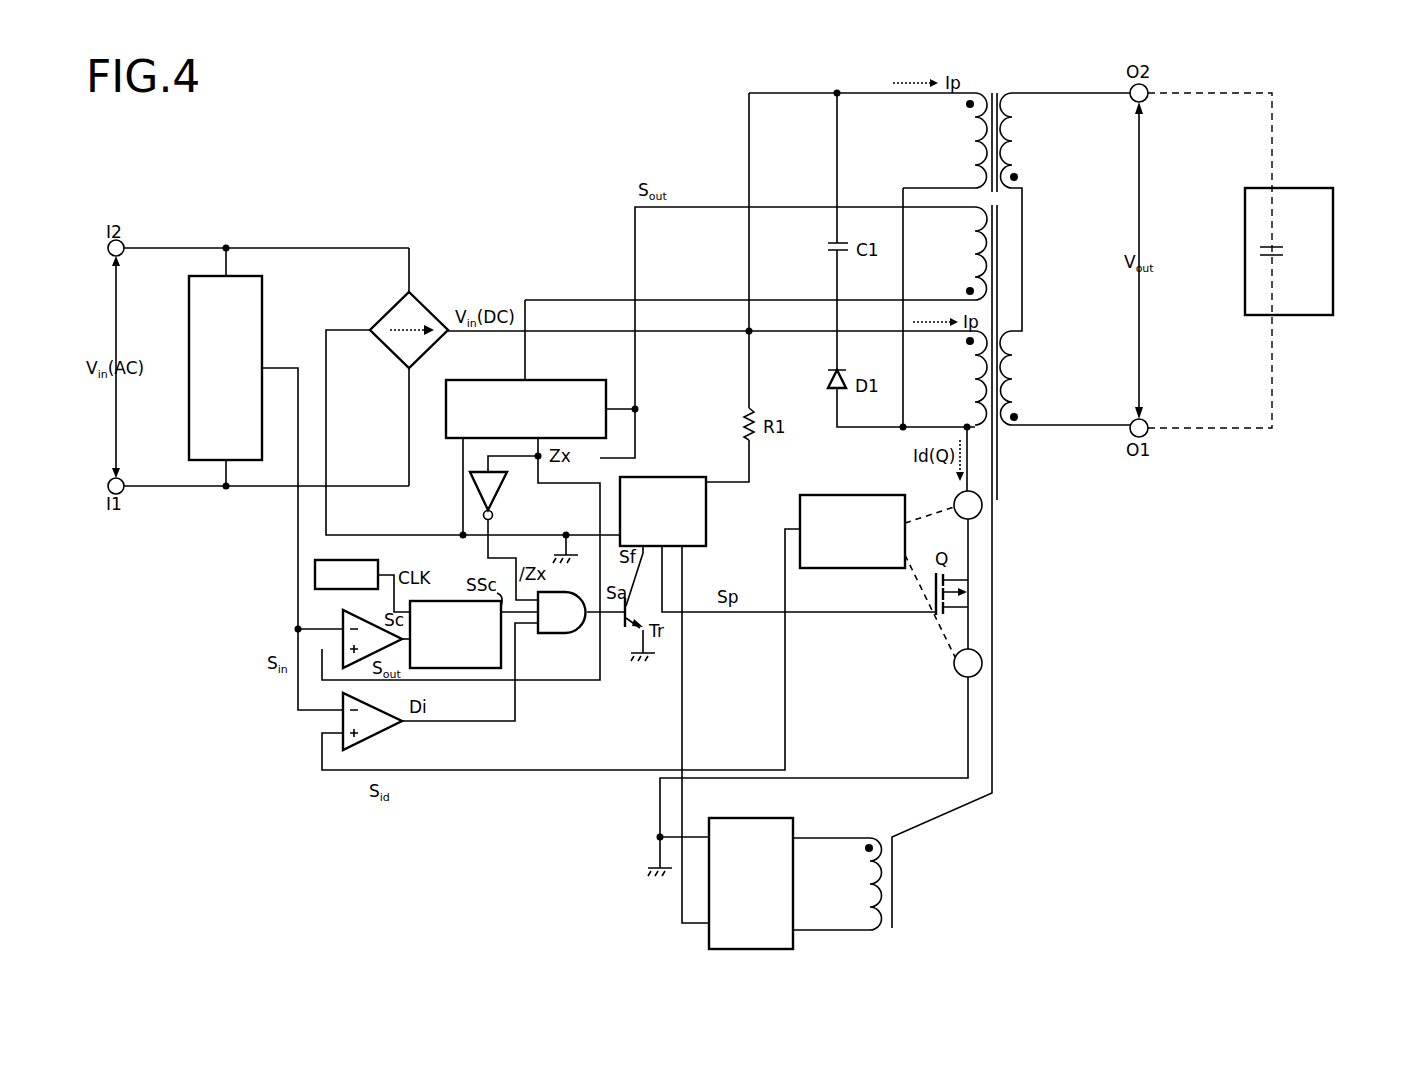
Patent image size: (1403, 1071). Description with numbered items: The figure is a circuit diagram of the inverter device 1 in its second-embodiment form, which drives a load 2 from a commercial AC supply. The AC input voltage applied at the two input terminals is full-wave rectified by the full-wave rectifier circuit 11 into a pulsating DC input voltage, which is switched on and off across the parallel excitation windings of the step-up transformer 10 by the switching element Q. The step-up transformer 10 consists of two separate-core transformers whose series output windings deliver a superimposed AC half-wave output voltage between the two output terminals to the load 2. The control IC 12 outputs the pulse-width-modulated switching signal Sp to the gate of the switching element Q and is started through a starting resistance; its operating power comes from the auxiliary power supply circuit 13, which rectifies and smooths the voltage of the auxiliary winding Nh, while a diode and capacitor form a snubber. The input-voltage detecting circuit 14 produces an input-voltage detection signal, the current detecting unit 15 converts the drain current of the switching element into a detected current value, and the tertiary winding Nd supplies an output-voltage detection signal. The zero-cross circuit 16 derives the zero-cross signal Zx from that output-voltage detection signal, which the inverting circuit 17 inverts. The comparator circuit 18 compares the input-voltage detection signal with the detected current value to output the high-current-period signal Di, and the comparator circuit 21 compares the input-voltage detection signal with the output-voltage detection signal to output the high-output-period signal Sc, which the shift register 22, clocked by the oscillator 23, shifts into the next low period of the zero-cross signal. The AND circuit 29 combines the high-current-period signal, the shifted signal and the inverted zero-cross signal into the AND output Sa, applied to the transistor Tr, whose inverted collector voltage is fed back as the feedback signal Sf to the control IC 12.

The inverter device 1 is at (478, 218).
The load 2 is at (1333, 245).
The step-up transformer 10 is at (1042, 251).
The full-wave rectifier circuit 11 is at (425, 303).
The control IC 12 is at (706, 511).
The auxiliary power supply circuit 13 is at (772, 818).
The input-voltage detecting circuit 14 is at (262, 300).
The current detecting unit 15 is at (850, 495).
The zero-cross circuit 16 is at (552, 380).
The inverting circuit 17 is at (500, 490).
The comparator circuit 18 is at (378, 740).
The comparator circuit 21 is at (363, 620).
The shift register 22 is at (455, 601).
The oscillator 23 is at (315, 575).
The AND circuit 29 is at (560, 633).